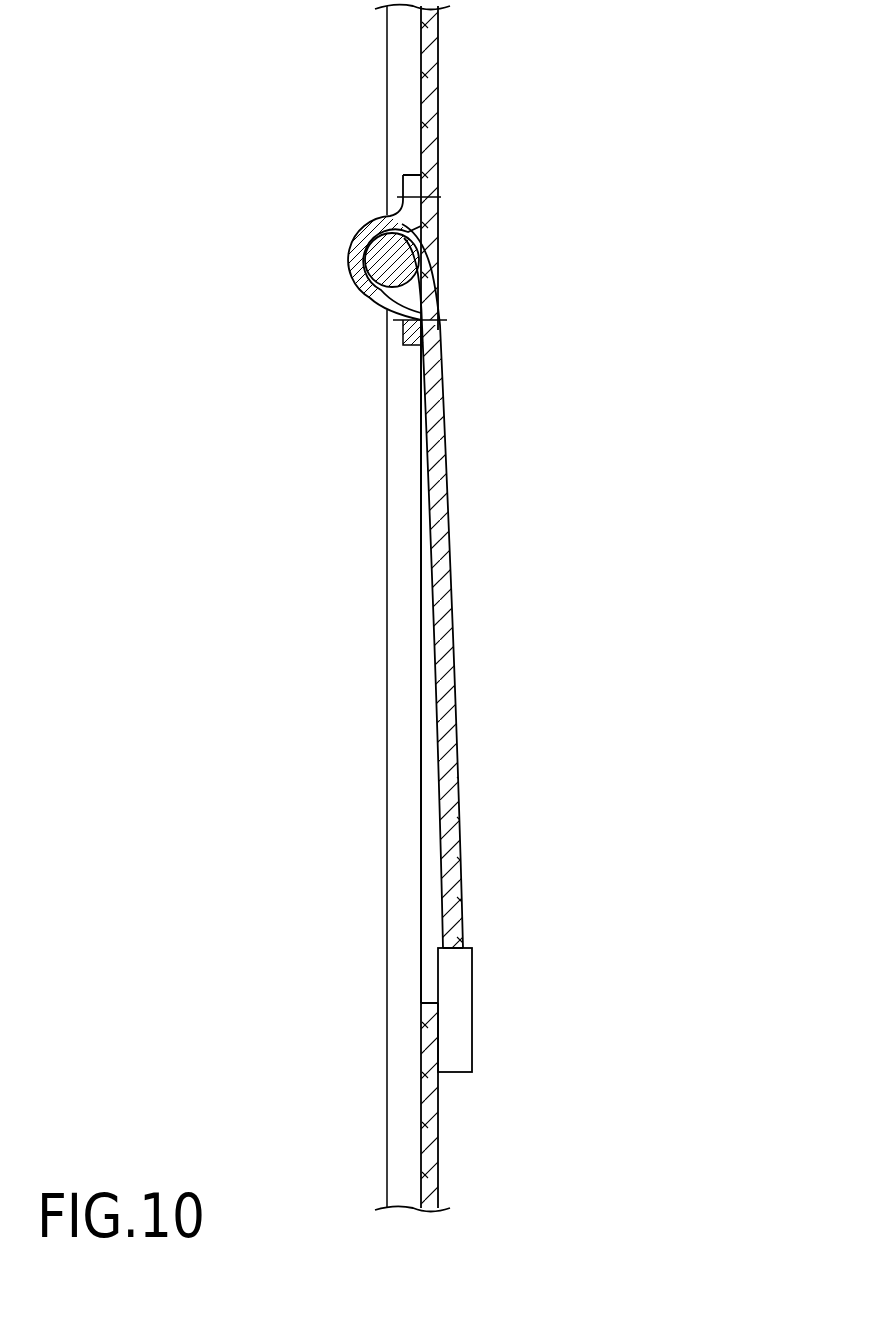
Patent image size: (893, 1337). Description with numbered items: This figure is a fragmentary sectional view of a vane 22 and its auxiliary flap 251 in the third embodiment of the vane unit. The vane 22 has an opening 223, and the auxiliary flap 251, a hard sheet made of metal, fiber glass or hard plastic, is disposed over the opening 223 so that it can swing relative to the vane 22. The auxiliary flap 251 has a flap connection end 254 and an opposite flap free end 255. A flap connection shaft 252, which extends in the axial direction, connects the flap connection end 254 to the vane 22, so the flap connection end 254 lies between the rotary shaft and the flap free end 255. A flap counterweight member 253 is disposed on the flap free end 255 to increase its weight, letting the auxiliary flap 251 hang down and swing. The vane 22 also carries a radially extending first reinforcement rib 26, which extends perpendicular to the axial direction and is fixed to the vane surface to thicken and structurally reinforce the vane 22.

The vane 22 is at (432, 1072).
The radially extending first reinforcement rib 26 is at (403, 903).
The opening 223 is at (425, 787).
The auxiliary flap 251 is at (432, 483).
The flap connection shaft 252 is at (358, 238).
The flap counterweight member 253 is at (459, 997).
The flap connection end 254 is at (433, 265).
The flap free end 255 is at (450, 945).